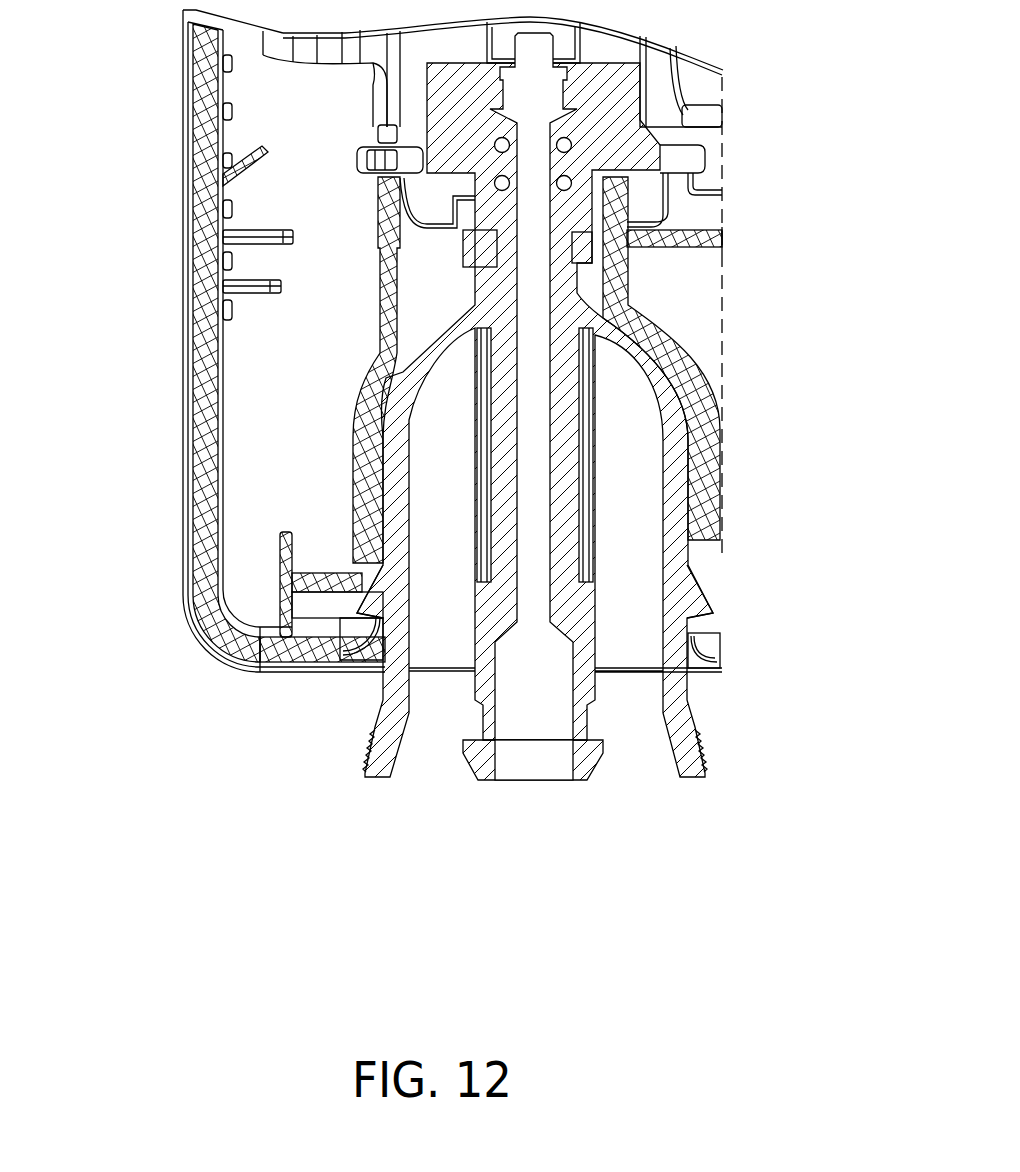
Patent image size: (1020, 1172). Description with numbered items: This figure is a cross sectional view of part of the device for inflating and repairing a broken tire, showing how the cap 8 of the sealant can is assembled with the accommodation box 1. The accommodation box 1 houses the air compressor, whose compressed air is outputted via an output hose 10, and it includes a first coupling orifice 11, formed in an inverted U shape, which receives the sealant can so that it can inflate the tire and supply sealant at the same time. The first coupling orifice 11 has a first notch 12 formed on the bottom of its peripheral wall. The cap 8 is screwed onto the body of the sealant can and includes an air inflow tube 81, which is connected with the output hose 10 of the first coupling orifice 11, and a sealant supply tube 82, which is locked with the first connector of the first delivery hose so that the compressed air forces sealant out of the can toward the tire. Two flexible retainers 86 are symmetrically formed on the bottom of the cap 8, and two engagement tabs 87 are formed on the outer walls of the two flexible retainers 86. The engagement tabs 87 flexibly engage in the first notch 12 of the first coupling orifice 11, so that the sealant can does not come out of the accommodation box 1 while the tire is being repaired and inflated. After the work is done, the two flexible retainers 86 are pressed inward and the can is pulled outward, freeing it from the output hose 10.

The accommodation box 1 is at (203, 357).
The cap 8 is at (605, 296).
The output hose 10 is at (570, 293).
The first coupling orifice 11 is at (440, 597).
The first notch 12 is at (340, 620).
The air inflow tube 81 is at (652, 165).
The sealant supply tube 82 is at (590, 760).
The flexible retainers 86 is at (375, 768).
The engagement tabs 87 is at (367, 607).